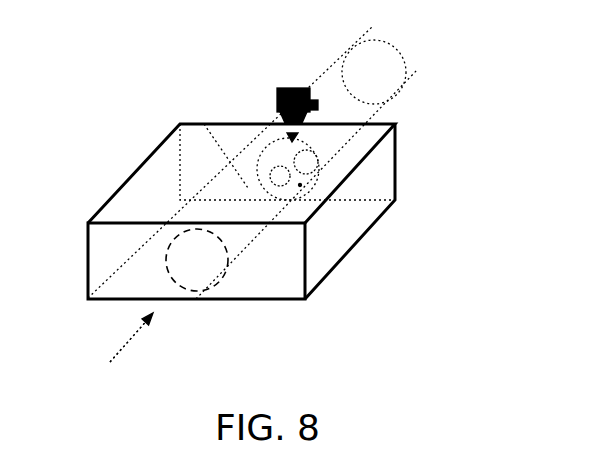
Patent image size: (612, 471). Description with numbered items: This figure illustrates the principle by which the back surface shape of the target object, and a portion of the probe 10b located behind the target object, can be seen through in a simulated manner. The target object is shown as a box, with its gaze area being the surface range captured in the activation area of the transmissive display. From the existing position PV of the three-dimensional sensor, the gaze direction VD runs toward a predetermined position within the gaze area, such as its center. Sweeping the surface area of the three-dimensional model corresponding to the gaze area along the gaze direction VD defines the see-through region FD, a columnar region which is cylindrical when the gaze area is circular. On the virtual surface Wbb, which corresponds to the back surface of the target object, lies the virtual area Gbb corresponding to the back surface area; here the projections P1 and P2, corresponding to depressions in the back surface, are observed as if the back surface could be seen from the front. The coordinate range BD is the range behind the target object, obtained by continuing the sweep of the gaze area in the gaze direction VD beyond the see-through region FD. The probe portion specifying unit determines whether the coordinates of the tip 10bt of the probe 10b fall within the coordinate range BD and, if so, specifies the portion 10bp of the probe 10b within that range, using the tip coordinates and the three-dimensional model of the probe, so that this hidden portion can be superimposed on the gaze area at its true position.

The virtual surface Wbb is at (180, 123).
The see-through region FD is at (204, 124).
The tip of the probe 10bt is at (268, 146).
The probe 10b is at (291, 87).
The coordinate range behind the target object BD is at (332, 88).
The virtual area Gbb is at (318, 186).
The portion of the probe 10bp is at (285, 140).
The projection P2 is at (320, 180).
The projection P1 is at (300, 185).
The existing position of the three-dimensional sensor PV is at (116, 348).
The gaze direction VD is at (124, 346).